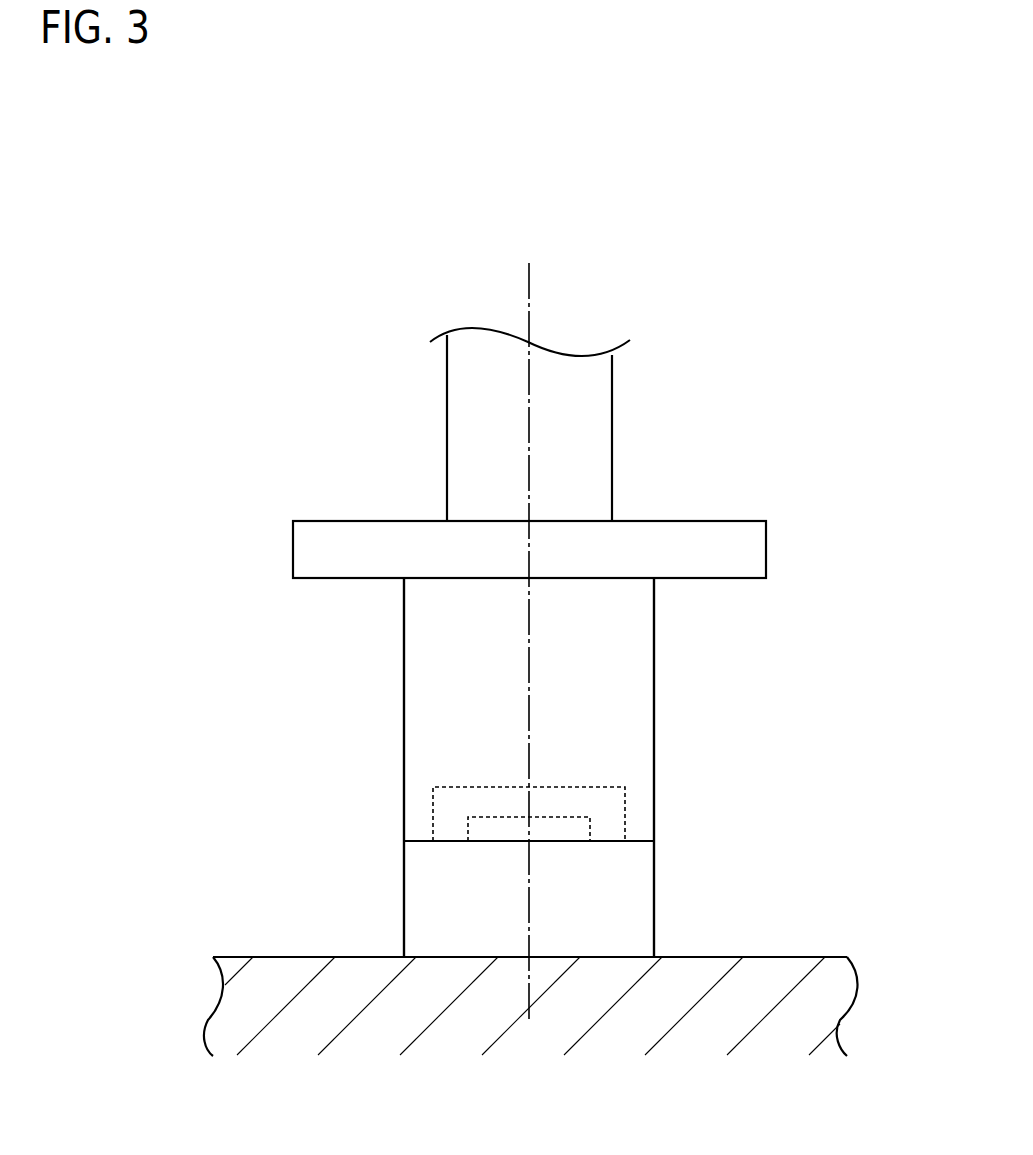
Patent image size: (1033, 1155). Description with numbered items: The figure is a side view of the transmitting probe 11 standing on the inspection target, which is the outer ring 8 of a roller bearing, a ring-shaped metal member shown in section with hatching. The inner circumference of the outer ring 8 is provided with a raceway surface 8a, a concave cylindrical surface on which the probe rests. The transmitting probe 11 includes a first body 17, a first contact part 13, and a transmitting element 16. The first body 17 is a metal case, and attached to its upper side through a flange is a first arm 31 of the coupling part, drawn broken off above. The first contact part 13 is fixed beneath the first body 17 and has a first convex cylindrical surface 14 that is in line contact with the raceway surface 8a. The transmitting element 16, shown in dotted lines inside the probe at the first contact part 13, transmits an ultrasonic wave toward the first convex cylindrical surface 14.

The first arm 31 is at (612, 424).
The first body 17 is at (644, 647).
The transmitting probe 11 is at (536, 767).
The transmitting element 16 is at (467, 825).
The first contact part 13 is at (644, 896).
The raceway surface 8a is at (298, 957).
The outer ring 8 is at (531, 1007).
The first convex cylindrical surface 14 is at (608, 957).